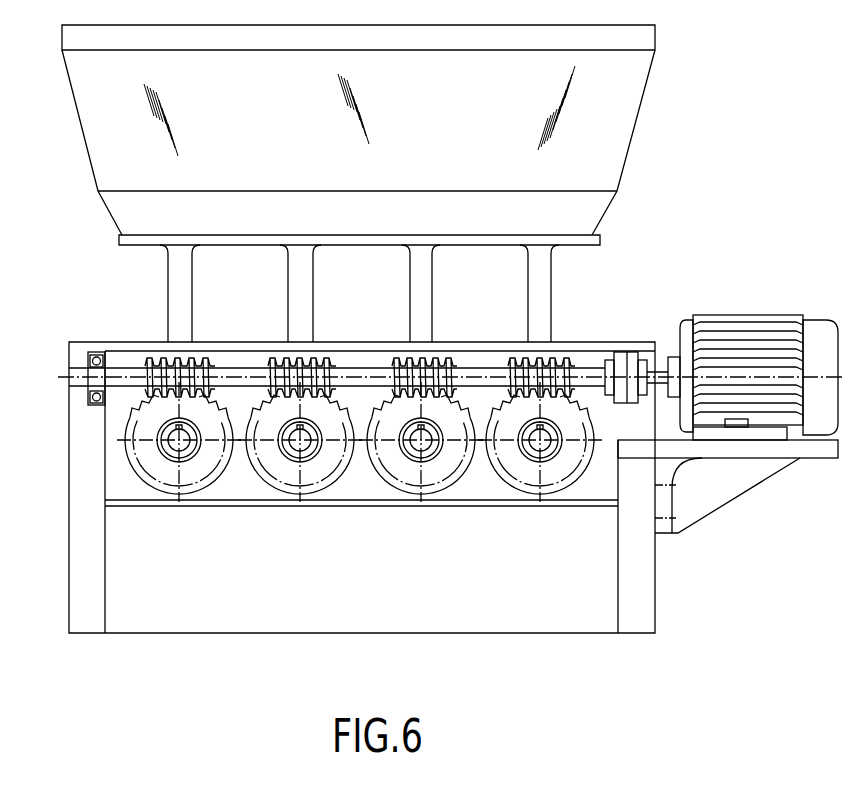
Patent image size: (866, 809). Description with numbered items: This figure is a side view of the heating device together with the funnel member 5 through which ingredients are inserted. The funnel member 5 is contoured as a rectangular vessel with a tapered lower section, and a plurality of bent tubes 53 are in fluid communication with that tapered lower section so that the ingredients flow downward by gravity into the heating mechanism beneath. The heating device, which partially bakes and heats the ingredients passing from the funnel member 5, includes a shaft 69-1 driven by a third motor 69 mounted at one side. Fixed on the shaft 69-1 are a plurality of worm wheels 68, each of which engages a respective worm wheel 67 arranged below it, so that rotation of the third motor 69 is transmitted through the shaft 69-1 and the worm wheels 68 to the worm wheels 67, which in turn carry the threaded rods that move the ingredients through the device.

The funnel member 5 is at (602, 153).
The bent tubes 53 is at (551, 303).
The worm wheels 67 is at (553, 478).
The worm wheels 68 is at (557, 363).
The third motor 69 is at (770, 327).
The shaft 69-1 is at (118, 377).